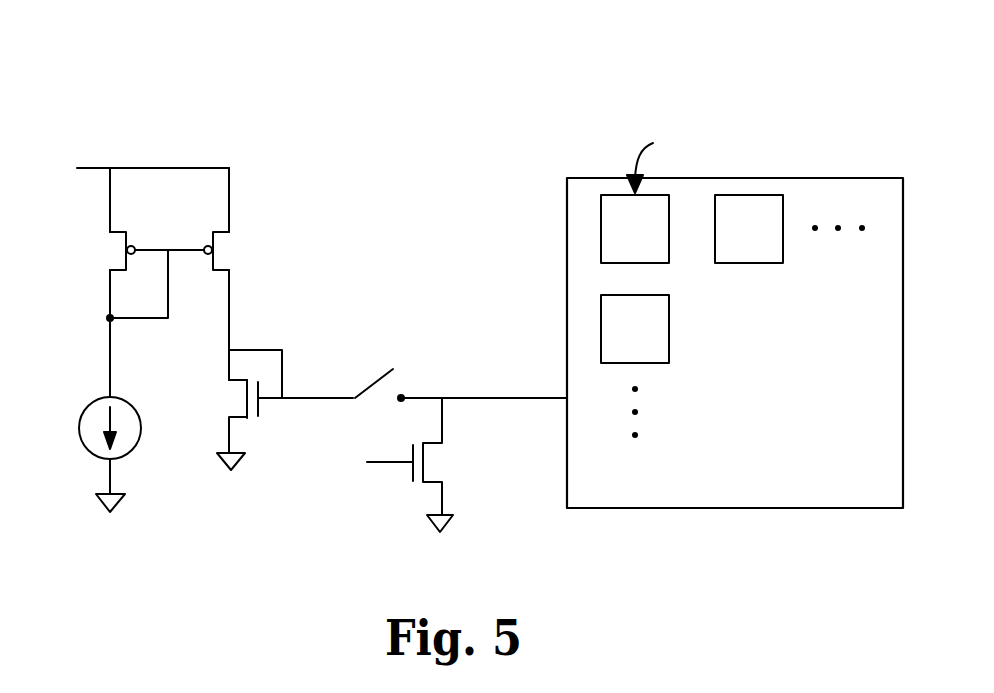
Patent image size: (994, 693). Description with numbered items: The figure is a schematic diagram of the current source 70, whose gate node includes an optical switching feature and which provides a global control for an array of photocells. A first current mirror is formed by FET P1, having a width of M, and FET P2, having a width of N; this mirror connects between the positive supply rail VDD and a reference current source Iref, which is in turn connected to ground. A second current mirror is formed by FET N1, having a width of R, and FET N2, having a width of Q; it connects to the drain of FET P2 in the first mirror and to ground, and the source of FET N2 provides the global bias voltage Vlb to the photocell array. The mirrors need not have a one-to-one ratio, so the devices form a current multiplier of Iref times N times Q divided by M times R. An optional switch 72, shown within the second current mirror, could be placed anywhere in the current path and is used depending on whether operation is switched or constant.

The current source 70 is at (185, 53).
The optional switch 72 is at (368, 365).
The FET P1 is at (129, 243).
The FET P2 is at (237, 259).
The FET N1 is at (238, 410).
The FET N2 is at (420, 465).